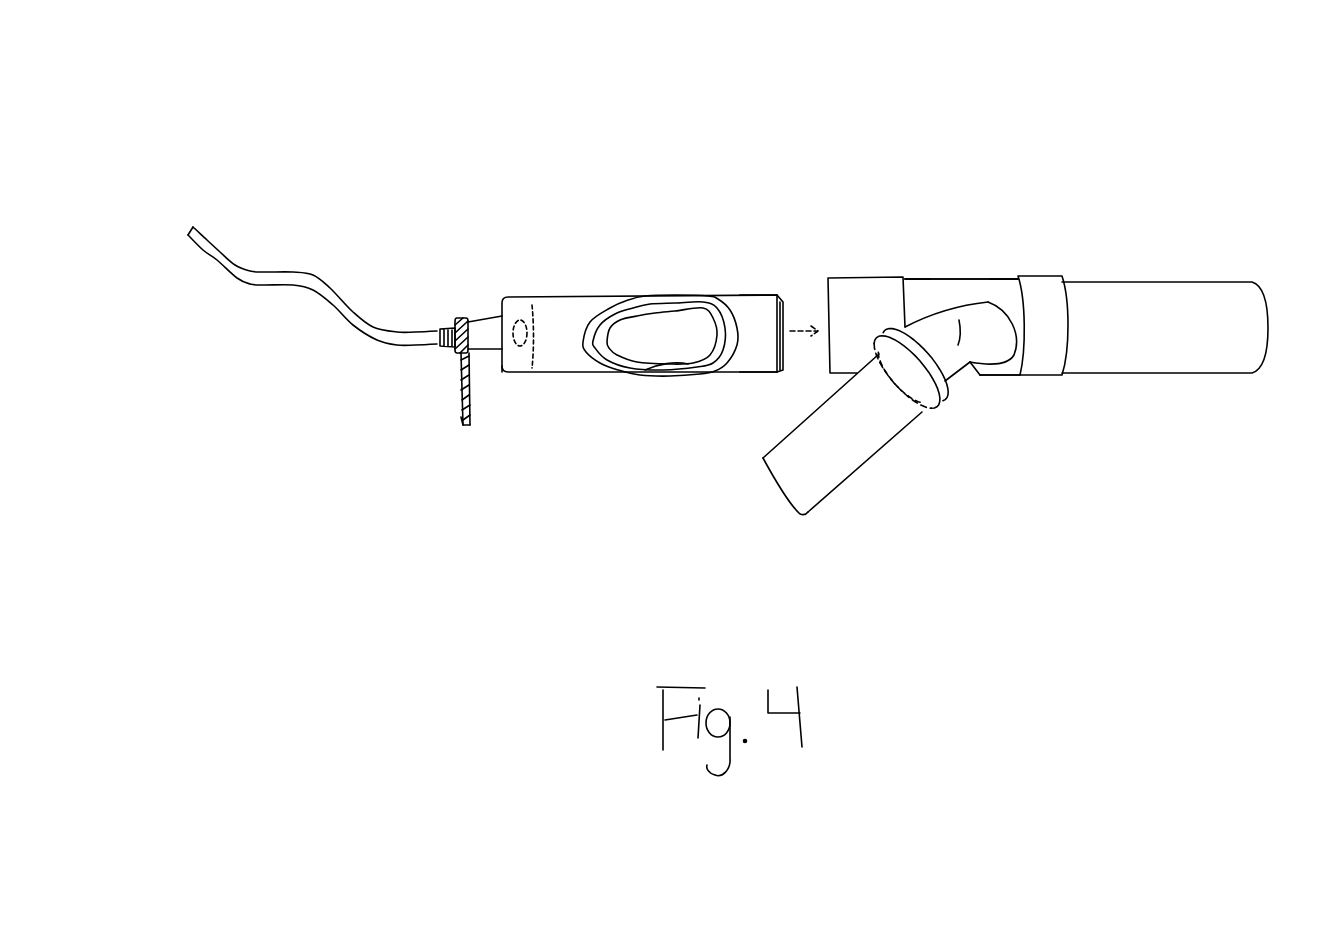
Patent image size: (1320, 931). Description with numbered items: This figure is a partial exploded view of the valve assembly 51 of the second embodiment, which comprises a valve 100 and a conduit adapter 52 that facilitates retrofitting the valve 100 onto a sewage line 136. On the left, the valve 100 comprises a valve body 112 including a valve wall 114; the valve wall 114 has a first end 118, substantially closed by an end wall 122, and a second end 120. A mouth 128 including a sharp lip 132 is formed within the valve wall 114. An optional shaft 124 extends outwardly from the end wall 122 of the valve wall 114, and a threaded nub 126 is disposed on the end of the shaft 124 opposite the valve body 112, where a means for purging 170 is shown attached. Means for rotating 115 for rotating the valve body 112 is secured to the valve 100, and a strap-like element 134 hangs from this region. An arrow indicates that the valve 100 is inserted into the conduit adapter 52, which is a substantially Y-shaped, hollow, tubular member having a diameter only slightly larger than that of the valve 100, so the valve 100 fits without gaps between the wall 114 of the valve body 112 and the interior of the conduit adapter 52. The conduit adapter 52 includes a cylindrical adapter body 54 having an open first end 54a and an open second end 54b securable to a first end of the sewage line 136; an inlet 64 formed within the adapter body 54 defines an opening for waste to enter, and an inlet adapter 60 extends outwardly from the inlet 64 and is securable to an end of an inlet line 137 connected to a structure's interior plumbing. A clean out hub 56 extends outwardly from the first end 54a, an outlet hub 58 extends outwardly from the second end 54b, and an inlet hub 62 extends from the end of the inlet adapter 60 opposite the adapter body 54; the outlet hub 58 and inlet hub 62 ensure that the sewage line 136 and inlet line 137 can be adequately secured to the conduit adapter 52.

The valve assembly 51 is at (780, 163).
The valve 100 is at (458, 277).
The means for purging 170 is at (232, 252).
The threaded nub 126 is at (445, 350).
The shaft 124 is at (470, 335).
The means for rotating 115 is at (470, 425).
The strap end 134 is at (463, 425).
The first end 118 is at (502, 373).
The valve body 112 is at (562, 317).
The end wall 122 is at (516, 360).
The sharp lip 132 is at (717, 300).
The mouth 128 is at (667, 307).
The valve wall 114 is at (735, 374).
The second end 120 is at (780, 375).
The clean out hub 56 is at (855, 290).
The adapter body 54 is at (950, 293).
The first end 54a is at (905, 327).
The second end 54b is at (1020, 293).
The inlet adapter 60 is at (982, 385).
The inlet hub 62 is at (957, 383).
The inlet 64 is at (970, 363).
The conduit adapter 52 is at (1017, 414).
The outlet hub 58 is at (1052, 290).
The sewage line 136 is at (1187, 300).
The inlet line 137 is at (833, 477).